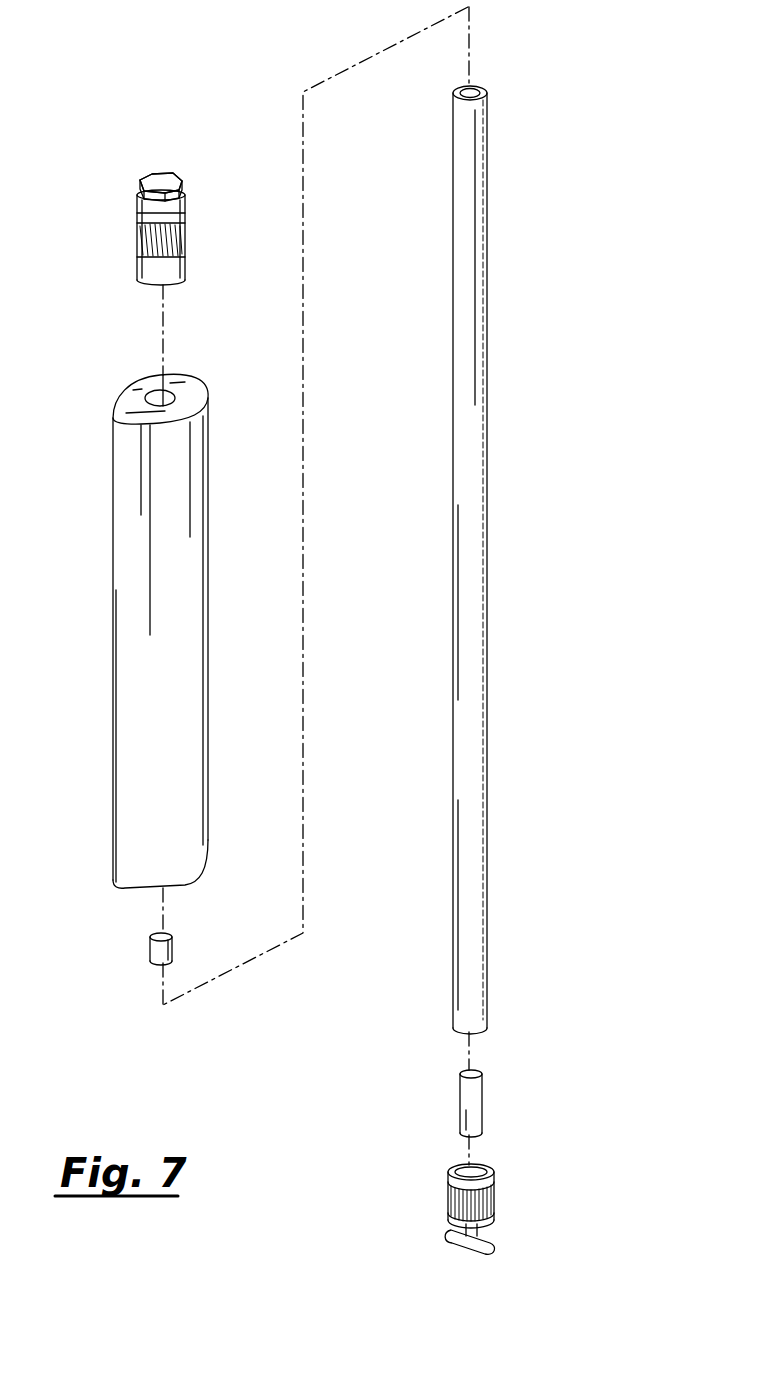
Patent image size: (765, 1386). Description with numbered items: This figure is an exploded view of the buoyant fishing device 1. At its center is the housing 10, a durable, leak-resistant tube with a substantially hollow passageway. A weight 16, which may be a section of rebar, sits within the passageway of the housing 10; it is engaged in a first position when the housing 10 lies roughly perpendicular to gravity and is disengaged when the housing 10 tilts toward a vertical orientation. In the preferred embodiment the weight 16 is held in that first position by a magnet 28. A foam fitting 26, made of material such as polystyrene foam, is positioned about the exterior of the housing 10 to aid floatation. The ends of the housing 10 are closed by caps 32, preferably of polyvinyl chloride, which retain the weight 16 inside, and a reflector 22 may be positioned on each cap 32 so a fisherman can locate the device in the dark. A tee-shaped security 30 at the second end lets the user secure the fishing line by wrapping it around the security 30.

The buoyant fishing device 1 is at (560, 246).
The housing 10 is at (476, 656).
The weight 16 is at (478, 1098).
The reflector 22 is at (140, 237).
The foam fitting 26 is at (125, 660).
The magnet 28 is at (150, 953).
The security 30 is at (460, 1249).
The cap 32 is at (170, 182).